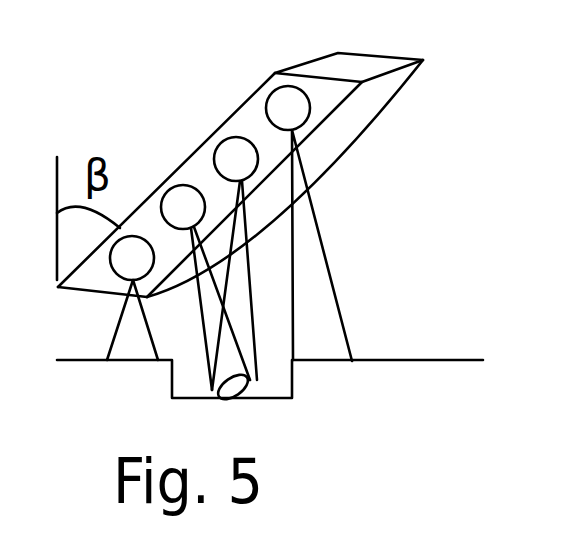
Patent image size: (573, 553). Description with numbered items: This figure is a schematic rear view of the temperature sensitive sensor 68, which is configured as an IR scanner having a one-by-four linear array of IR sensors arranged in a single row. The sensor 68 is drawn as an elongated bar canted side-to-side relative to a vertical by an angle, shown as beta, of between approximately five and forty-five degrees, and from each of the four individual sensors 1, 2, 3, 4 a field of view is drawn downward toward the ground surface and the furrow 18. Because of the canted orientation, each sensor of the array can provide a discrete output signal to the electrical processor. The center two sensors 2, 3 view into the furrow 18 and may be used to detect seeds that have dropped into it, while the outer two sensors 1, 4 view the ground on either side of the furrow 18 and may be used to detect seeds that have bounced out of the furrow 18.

The temperature sensitive sensor 68 is at (226, 122).
The furrow 18 is at (263, 398).
The outer IR sensor 1 is at (132, 298).
The center IR sensor 2 is at (205, 287).
The center IR sensor 3 is at (235, 263).
The outer IR sensor 4 is at (309, 223).